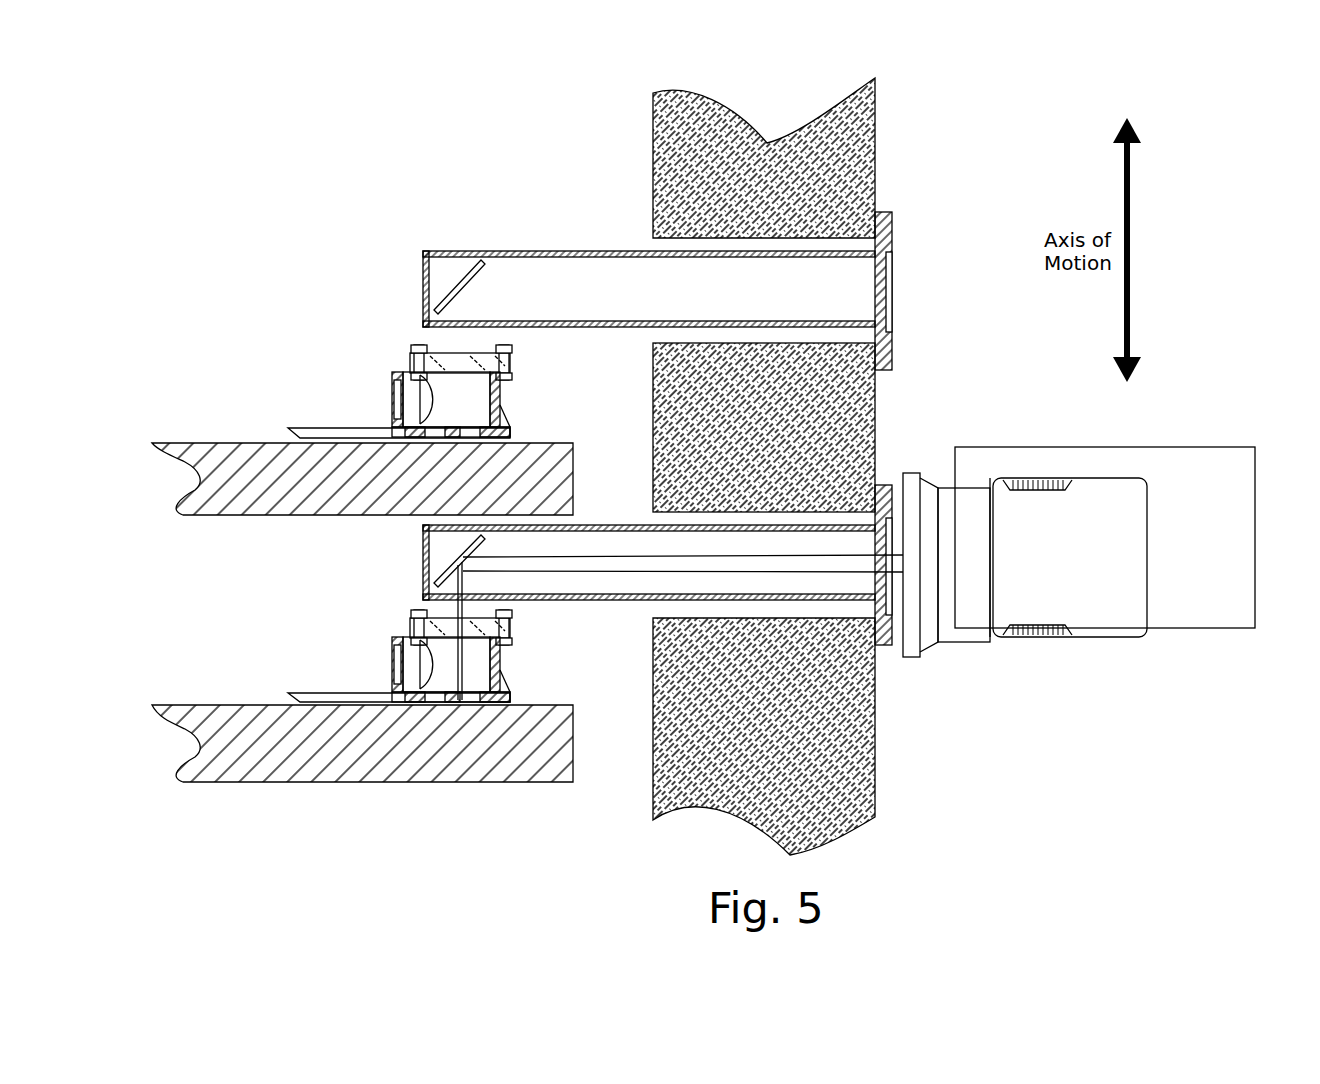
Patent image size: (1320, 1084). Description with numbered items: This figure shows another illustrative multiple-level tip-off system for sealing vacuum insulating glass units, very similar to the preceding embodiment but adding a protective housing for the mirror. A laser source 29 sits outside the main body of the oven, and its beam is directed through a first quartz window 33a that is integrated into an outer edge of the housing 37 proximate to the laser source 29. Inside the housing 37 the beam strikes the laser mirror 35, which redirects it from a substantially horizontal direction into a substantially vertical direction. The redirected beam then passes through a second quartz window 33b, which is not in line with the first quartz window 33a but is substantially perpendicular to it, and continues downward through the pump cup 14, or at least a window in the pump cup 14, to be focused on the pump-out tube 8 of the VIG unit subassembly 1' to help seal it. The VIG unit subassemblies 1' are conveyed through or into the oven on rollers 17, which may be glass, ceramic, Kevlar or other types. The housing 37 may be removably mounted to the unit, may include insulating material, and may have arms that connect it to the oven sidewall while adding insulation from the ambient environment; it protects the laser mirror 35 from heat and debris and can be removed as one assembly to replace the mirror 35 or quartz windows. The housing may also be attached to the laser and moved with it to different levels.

The VIG unit subassembly 1' is at (487, 593).
The pump-out tube 8 is at (437, 452).
The pump cup 14 is at (396, 372).
The rollers 17 is at (235, 502).
The laser source 29 is at (1185, 460).
The first quartz window 33a is at (887, 563).
The second quartz window 33b is at (455, 607).
The laser mirror 35 is at (463, 283).
The housing 37 is at (587, 251).